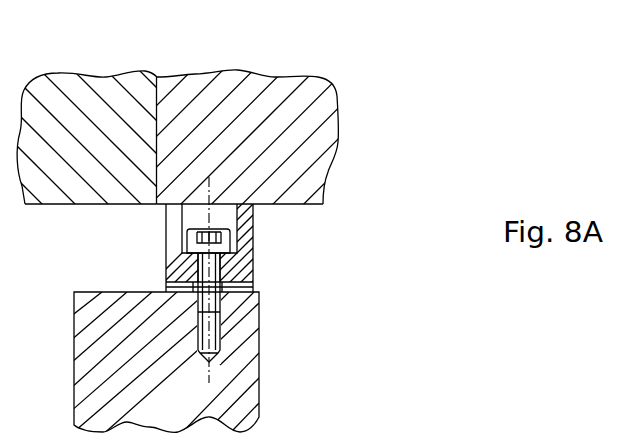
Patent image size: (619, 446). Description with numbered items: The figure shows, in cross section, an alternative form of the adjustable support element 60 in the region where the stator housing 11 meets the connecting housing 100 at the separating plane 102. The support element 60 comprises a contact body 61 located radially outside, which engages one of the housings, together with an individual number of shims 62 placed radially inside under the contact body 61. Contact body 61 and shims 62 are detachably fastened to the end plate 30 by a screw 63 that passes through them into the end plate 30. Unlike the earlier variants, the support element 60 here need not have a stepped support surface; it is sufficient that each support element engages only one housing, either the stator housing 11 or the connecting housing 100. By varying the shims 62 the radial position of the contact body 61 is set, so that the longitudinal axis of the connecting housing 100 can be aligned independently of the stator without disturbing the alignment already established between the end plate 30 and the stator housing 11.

The connecting housing 100 is at (98, 90).
The separating plane 102 is at (161, 87).
The stator housing 11 is at (245, 92).
The support element 60 is at (286, 246).
The contact body 61 is at (245, 253).
The shims 62 is at (258, 288).
The screw 63 is at (203, 262).
The end plate 30 is at (248, 406).